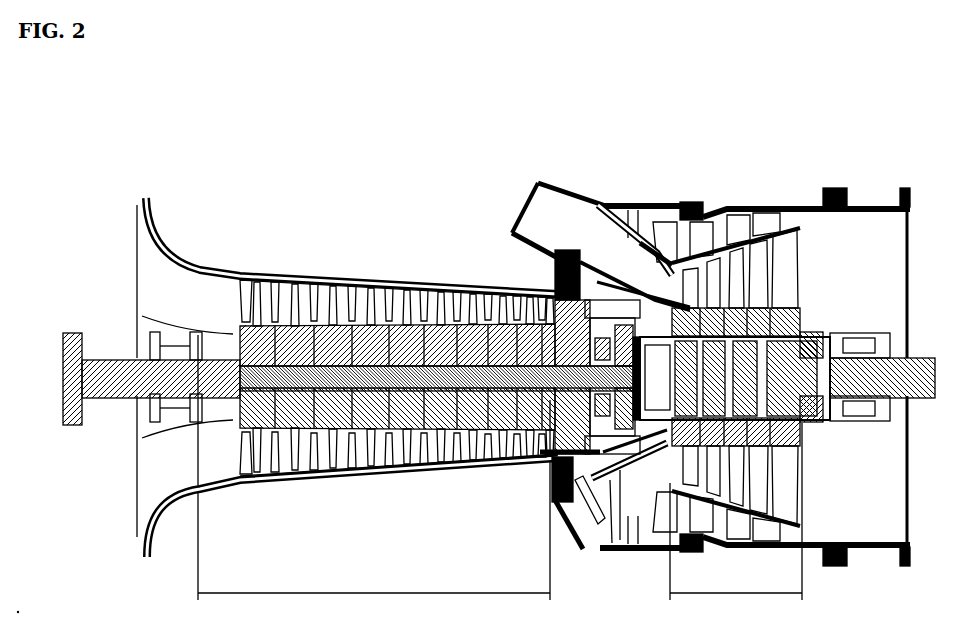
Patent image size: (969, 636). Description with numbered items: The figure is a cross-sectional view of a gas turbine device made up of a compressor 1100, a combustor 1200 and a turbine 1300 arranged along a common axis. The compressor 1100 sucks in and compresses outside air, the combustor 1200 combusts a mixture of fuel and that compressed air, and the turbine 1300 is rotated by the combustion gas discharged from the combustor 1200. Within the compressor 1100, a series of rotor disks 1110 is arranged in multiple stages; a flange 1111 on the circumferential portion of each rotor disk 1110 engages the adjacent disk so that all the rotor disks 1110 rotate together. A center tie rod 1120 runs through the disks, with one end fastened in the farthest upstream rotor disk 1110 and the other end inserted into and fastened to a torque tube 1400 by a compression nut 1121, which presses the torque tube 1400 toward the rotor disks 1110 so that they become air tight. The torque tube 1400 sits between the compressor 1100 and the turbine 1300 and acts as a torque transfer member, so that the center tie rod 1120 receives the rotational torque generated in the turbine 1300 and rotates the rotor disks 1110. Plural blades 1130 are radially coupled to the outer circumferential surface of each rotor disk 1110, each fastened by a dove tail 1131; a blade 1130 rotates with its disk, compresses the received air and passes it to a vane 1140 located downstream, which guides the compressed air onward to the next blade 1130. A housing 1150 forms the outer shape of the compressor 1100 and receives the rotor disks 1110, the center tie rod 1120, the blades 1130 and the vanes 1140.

The compressor 1100 is at (415, 467).
The rotor disk 1110 is at (276, 300).
The flange 1111 is at (278, 300).
The center tie rod 1120 is at (140, 428).
The compression nut 1121 is at (485, 288).
The blade 1130 is at (293, 278).
The dove tail 1131 is at (305, 284).
The vane 1140 is at (268, 266).
The housing 1150 is at (388, 259).
The combustor 1200 is at (546, 169).
The turbine 1300 is at (736, 414).
The torque tube 1400 is at (622, 470).